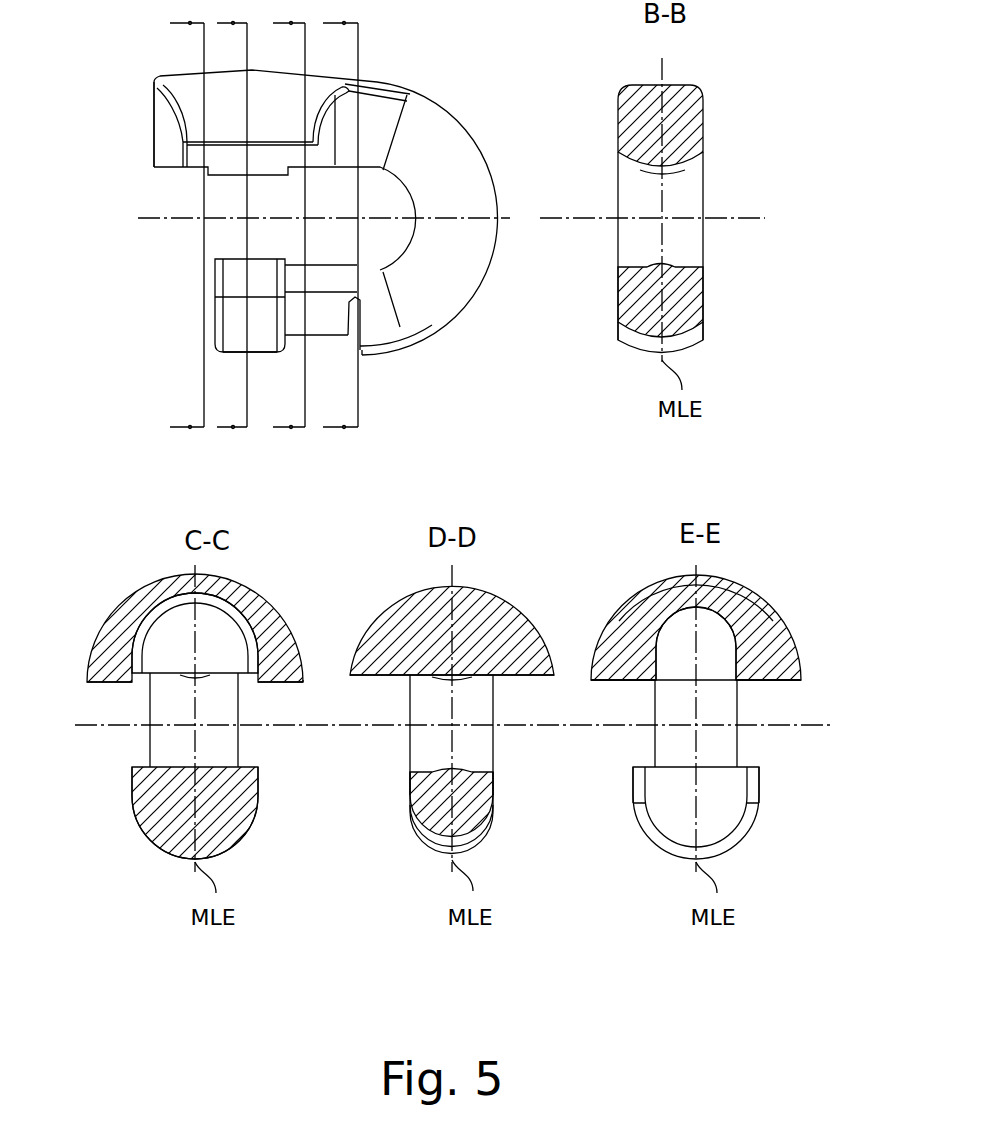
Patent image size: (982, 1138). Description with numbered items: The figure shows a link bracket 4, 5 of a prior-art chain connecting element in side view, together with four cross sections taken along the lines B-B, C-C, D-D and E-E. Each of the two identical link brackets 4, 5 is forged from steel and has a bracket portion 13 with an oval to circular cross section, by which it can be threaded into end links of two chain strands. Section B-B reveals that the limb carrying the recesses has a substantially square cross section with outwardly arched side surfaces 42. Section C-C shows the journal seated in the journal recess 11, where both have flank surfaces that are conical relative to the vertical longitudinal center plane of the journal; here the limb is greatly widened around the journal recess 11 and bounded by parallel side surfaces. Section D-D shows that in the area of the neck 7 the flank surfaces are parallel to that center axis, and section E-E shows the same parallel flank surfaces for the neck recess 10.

The link bracket 4 is at (438, 90).
The link bracket 5 is at (315, 228).
The neck portion 7 is at (325, 336).
The neck recess 10 is at (682, 635).
The journal recess 11 is at (170, 625).
The bracket portion 13 is at (463, 128).
The outwardly arched side surface 42 is at (619, 128).